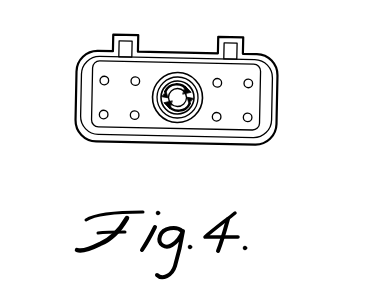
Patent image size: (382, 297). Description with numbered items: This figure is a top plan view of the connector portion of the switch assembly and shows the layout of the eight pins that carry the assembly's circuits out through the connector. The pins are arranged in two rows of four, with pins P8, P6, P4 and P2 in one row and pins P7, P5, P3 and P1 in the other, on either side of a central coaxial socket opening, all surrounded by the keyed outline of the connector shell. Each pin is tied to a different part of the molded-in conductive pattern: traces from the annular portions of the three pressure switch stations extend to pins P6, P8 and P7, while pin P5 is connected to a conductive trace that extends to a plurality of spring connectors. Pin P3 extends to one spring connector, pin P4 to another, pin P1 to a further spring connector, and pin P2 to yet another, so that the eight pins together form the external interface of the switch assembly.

The pin P1 is at (252, 122).
The pin P2 is at (252, 81).
The pin P3 is at (215, 122).
The pin P4 is at (215, 78).
The pin P5 is at (135, 119).
The pin P6 is at (137, 76).
The pin P7 is at (104, 119).
The pin P8 is at (102, 76).